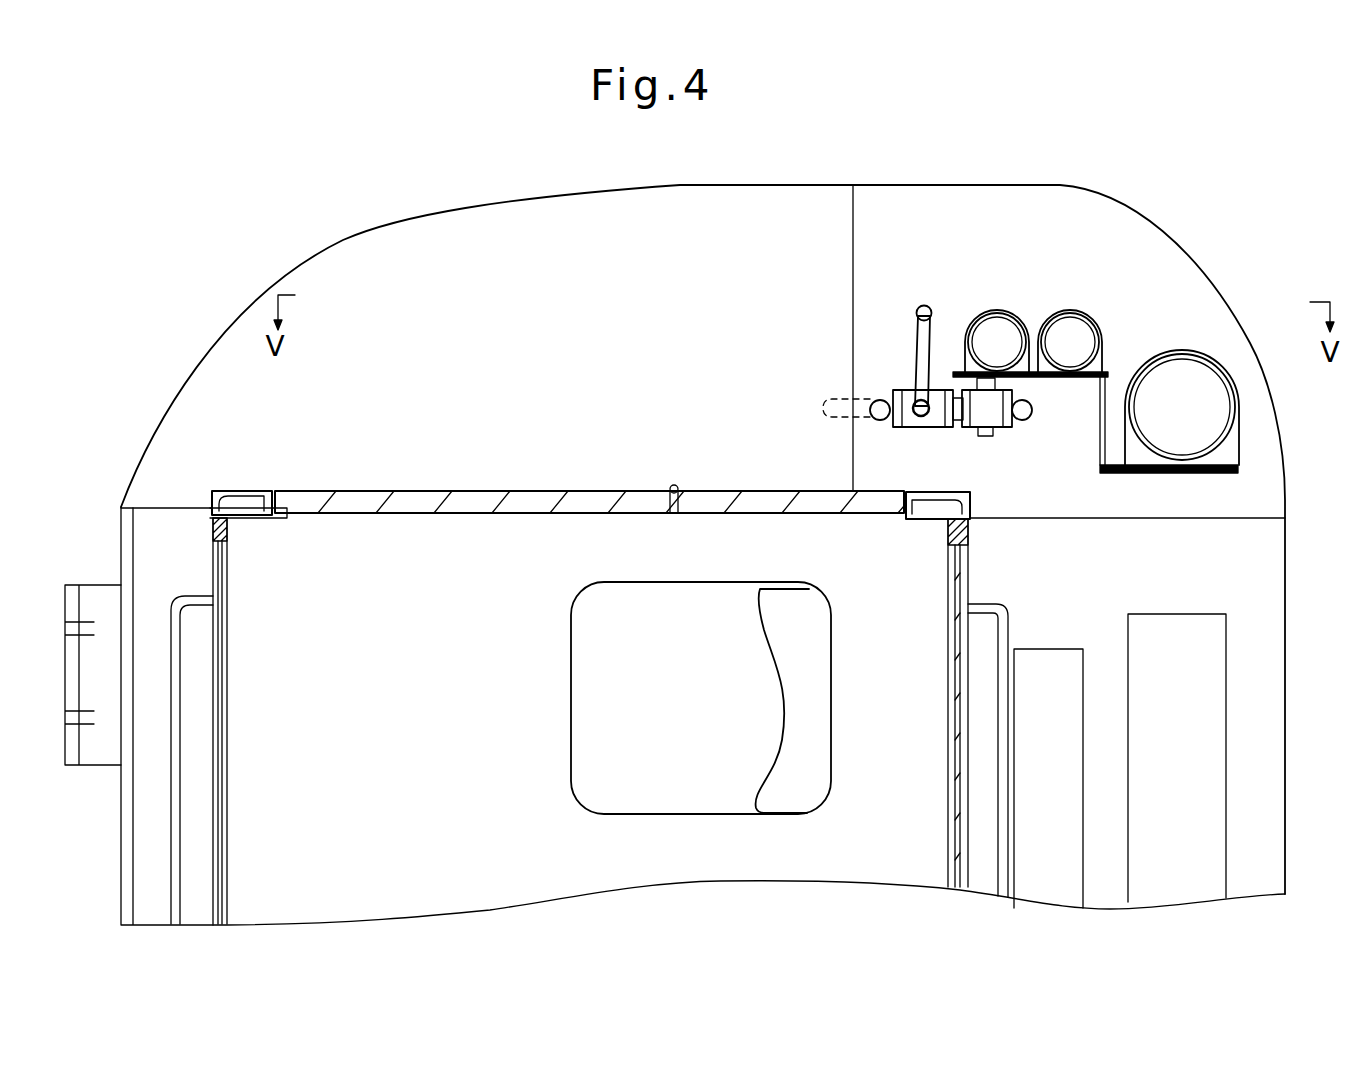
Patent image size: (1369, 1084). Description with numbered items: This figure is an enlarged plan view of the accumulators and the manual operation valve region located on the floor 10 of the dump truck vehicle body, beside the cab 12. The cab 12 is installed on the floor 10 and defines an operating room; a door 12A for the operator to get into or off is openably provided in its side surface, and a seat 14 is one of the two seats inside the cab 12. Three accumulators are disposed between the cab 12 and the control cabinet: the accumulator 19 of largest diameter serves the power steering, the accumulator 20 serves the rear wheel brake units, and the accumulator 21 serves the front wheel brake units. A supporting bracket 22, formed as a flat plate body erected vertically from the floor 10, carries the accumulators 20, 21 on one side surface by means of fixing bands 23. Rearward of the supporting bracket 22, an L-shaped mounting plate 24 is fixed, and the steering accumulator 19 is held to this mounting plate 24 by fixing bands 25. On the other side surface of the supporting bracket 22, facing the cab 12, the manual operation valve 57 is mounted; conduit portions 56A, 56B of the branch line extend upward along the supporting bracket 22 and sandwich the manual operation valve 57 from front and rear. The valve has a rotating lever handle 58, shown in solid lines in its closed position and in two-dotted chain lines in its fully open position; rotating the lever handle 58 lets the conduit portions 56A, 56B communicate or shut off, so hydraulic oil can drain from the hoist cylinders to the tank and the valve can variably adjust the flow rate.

The floor 10 is at (402, 282).
The cab 12 is at (238, 490).
The door 12A is at (525, 497).
The seat 14 is at (663, 792).
The accumulator 19 is at (1188, 392).
The accumulator 20 is at (1068, 328).
The accumulator 21 is at (1010, 320).
The supporting bracket 22 is at (1108, 398).
The fixing bands 23 is at (1008, 328).
The mounting plate 24 is at (1197, 473).
The fixing bands 25 is at (1240, 442).
The conduit portion 56A is at (877, 390).
The conduit portion 56B is at (1028, 416).
The manual operation valve 57 is at (915, 345).
The lever handle 58 is at (917, 340).